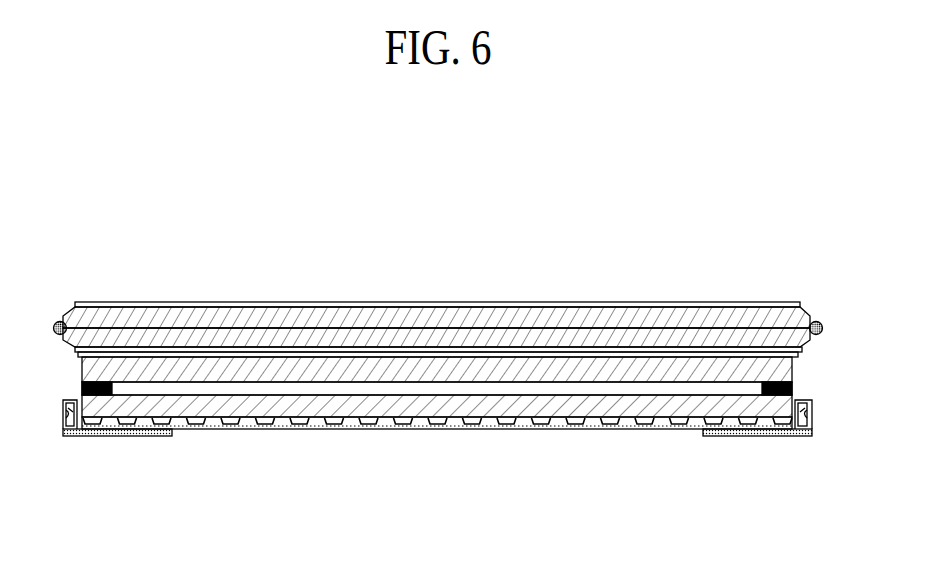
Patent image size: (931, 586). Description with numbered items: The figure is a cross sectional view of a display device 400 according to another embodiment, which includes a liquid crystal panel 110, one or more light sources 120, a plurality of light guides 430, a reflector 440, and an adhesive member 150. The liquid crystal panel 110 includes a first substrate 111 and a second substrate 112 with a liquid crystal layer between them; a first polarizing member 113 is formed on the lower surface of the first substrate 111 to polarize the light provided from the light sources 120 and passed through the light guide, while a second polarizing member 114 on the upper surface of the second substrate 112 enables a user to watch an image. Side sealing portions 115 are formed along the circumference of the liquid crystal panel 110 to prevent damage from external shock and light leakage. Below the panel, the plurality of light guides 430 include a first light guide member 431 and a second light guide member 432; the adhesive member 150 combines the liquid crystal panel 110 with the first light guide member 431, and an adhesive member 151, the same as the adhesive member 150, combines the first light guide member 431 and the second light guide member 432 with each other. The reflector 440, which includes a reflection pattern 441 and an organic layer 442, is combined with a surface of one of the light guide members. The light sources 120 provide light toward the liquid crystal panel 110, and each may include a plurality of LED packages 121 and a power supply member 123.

The display device 400 is at (122, 183).
The liquid crystal panel 110 is at (563, 231).
The first substrate 111 is at (402, 348).
The second substrate 112 is at (452, 320).
The first polarizing member 113 is at (505, 340).
The second polarizing member 114 is at (556, 304).
The side sealing portion 115 is at (818, 322).
The adhesive member 150 is at (762, 355).
The adhesive member 151 is at (795, 388).
The plurality of light guides 430 is at (418, 489).
The first light guide member 431 is at (352, 372).
The second light guide member 432 is at (405, 405).
The reflector 440 is at (468, 489).
The reflection pattern 441 is at (473, 425).
The organic layer 442 is at (560, 430).
The light source 120 is at (815, 511).
The LED package 121 is at (800, 437).
The power supply member 123 is at (750, 437).